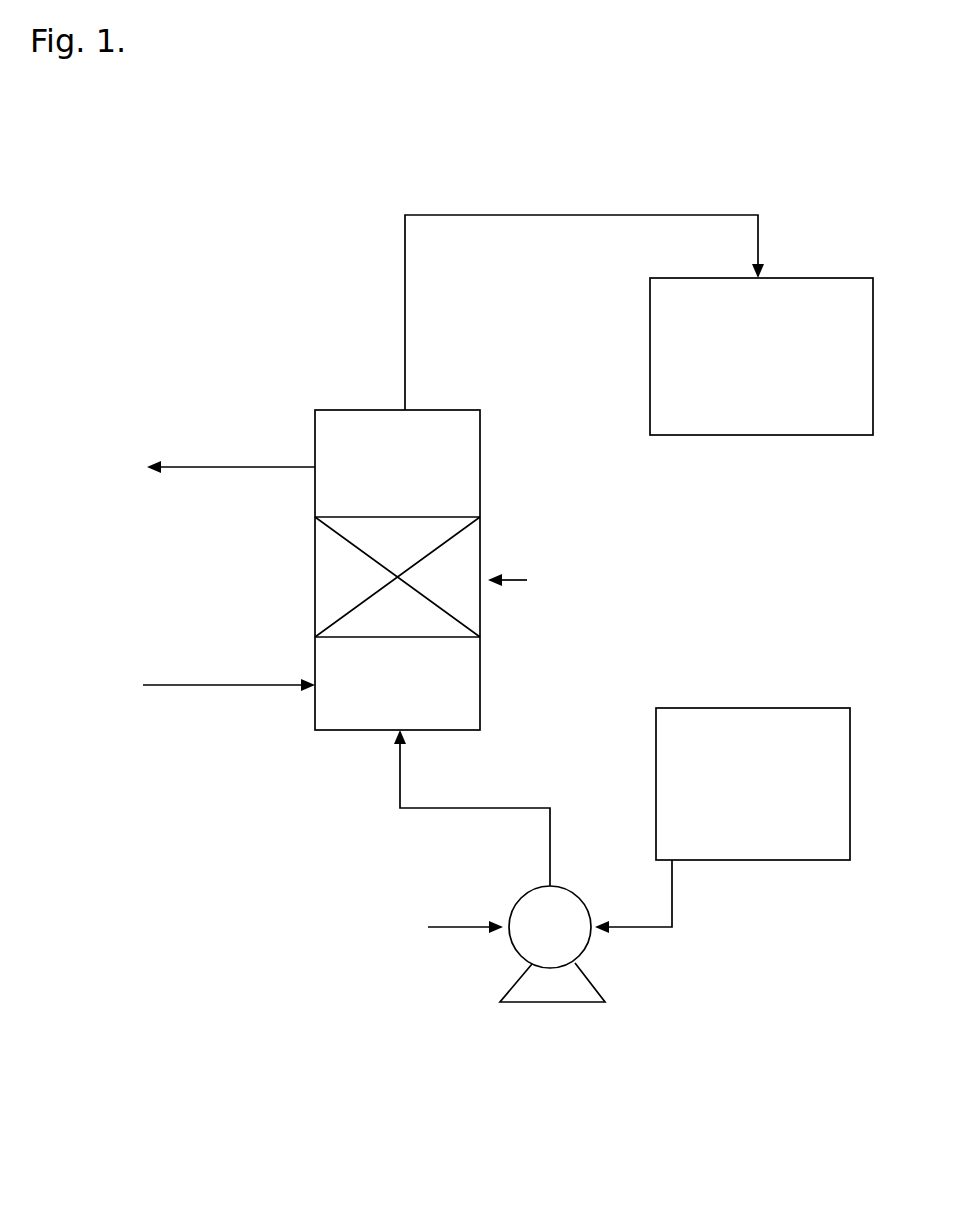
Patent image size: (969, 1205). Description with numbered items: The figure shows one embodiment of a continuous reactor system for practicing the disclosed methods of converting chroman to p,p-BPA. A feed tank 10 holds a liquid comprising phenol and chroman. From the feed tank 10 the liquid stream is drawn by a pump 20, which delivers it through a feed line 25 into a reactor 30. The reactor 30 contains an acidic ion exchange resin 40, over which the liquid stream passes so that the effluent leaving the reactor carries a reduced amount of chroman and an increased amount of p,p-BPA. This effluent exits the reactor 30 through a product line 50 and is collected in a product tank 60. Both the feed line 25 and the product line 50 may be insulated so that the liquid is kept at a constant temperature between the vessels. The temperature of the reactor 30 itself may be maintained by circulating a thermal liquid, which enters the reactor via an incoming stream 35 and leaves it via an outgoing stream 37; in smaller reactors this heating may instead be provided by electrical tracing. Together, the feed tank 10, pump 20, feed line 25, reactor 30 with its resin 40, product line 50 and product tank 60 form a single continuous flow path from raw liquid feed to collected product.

The feed tank 10 is at (753, 784).
The pump 20 is at (440, 932).
The feed line 25 is at (559, 843).
The reactor 30 is at (397, 570).
The incoming stream 35 is at (229, 669).
The outgoing stream 37 is at (231, 447).
The acidic ion exchange resin 40 is at (528, 582).
The product line 50 is at (584, 293).
The product tank 60 is at (761, 356).